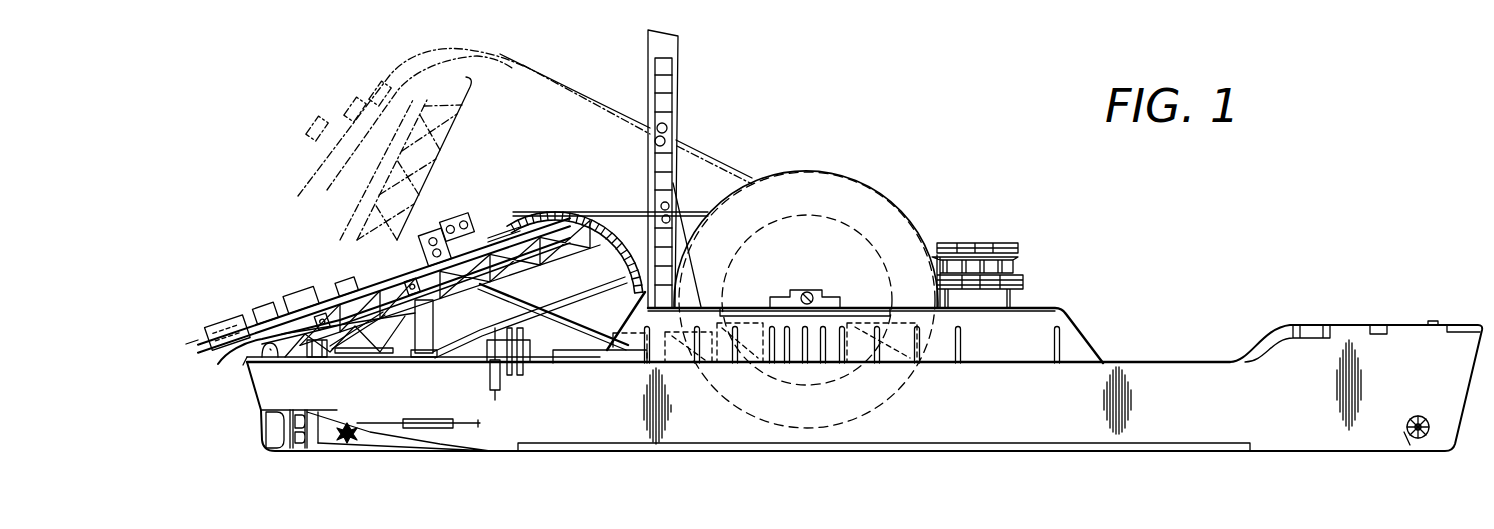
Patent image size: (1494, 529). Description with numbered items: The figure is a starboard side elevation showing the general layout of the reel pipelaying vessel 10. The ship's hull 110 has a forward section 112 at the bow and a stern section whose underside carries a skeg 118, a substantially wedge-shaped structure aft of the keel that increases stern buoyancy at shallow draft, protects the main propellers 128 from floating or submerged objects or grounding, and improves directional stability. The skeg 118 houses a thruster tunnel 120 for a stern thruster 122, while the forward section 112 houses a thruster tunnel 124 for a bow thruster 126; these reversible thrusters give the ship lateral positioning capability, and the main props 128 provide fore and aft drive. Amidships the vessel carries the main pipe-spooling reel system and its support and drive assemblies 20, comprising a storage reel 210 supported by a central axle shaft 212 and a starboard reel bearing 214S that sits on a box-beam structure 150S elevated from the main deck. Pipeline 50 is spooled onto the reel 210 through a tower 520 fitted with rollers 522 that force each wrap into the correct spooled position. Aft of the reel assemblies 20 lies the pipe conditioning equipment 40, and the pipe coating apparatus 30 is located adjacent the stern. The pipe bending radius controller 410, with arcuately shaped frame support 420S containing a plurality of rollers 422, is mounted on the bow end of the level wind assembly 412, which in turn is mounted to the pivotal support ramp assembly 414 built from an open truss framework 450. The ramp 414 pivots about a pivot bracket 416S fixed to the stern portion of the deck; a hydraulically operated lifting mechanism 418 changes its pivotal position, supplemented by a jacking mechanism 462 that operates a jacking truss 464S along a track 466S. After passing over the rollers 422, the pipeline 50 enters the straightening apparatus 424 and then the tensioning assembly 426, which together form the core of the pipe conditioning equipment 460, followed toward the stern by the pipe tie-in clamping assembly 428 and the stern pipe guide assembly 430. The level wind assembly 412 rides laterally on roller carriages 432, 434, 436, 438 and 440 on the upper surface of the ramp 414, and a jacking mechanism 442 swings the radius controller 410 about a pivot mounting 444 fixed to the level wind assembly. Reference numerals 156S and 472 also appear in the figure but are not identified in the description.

The reel vessel 10 is at (1302, 268).
The main pipe-spooling reel system and associated support and drive assemblies 20 is at (887, 223).
The pipe coating apparatus 30 is at (222, 290).
The pipe conditioning equipment 40 is at (298, 195).
The pipeline 50 is at (720, 155).
The ship's hull 110 is at (1338, 440).
The forward section 112 is at (1188, 362).
The skeg 118 is at (323, 440).
The thruster tunnel 120 is at (347, 440).
The stern thruster 122 is at (352, 440).
The thruster tunnel 124 is at (1432, 438).
The bow thruster 126 is at (1410, 436).
The main propeller 128 is at (297, 443).
The box-beam structure 150S is at (1047, 305).
The bilge strip 156S is at (1097, 450).
The storage reel 210 is at (862, 177).
The central axle shaft 212 is at (803, 291).
The reel bearing 214S is at (847, 282).
The pipe bending radius controller 410 is at (587, 227).
The level wind assembly 412 is at (445, 250).
The pivotal support ramp assembly 414 is at (467, 327).
The pivot bracket 416S is at (262, 366).
The hydraulically operated lifting mechanism 418 is at (417, 340).
The arcuately shaped frame support 420S is at (627, 287).
The rollers 422 is at (672, 244).
The straightening apparatus 424 is at (477, 227).
The tensioning assembly 426 is at (449, 234).
The pipe tie-in clamping assembly 428 is at (312, 272).
The stern pipe guide assembly 430 is at (247, 360).
The roller carriage 432 is at (243, 366).
The roller carriage 434 is at (380, 346).
The roller carriage 436 is at (424, 345).
The roller carriage 438 is at (552, 227).
The roller carriage 440 is at (613, 230).
The jacking mechanism 442 is at (575, 360).
The pivot mounting 444 is at (493, 227).
The open truss framework 450 is at (363, 327).
The pipe conditioning equipment 460 is at (463, 227).
The jacking mechanism 462 is at (791, 371).
The jacking truss 464S is at (595, 360).
The track 466S is at (560, 353).
The ramp rail 472 is at (305, 230).
The tower 520 is at (680, 95).
The rollers 522 is at (680, 210).